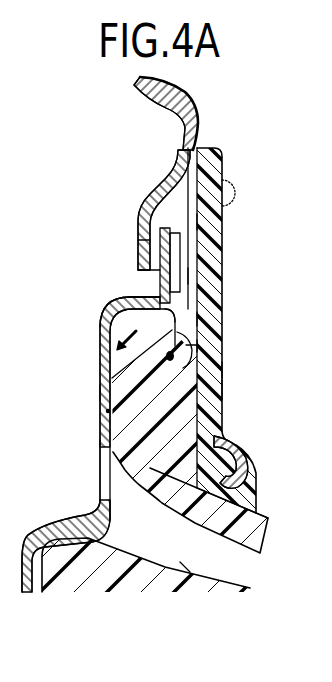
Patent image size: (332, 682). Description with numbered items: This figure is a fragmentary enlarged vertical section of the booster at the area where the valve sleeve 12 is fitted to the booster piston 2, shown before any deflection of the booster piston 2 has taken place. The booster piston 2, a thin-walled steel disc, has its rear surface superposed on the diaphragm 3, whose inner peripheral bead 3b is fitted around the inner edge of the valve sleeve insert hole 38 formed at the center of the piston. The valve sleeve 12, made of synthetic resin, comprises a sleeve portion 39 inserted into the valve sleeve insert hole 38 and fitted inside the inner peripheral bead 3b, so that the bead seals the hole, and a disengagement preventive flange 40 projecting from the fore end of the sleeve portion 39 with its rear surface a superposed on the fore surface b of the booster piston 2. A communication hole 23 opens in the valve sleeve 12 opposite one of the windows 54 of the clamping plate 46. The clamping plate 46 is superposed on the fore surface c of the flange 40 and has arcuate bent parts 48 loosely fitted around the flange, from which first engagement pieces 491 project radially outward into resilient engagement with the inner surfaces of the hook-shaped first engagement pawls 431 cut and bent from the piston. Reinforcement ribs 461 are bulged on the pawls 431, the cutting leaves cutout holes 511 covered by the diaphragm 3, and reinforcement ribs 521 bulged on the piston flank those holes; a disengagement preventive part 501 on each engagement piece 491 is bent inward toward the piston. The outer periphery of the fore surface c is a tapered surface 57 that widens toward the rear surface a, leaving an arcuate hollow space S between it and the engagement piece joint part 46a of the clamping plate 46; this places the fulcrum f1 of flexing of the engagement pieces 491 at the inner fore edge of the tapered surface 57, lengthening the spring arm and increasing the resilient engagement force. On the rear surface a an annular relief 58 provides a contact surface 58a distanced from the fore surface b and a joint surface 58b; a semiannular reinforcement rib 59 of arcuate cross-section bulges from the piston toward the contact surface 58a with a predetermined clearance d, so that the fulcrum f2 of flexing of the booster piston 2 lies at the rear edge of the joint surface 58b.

The booster piston 2 is at (181, 120).
The diaphragm 3 is at (200, 101).
The inner peripheral bead 3b is at (248, 503).
The valve sleeve 12 is at (88, 592).
The communication hole 23 is at (187, 567).
The valve sleeve insert hole 38 is at (253, 482).
The sleeve portion 39 is at (257, 538).
The disengagement preventive flange 40 is at (112, 420).
The clamping plate 46 is at (100, 440).
The engagement piece joint part 46a is at (105, 318).
The arcuate bent parts 48 is at (137, 290).
The windows 54 is at (100, 500).
The tapered surface 57 is at (132, 352).
The annular relief 58 is at (180, 352).
The contact surface 58a is at (142, 280).
The joint surface 58b is at (197, 345).
The semiannular reinforcement ribs 59 is at (198, 320).
The first engagement pawls 431 is at (137, 238).
The reinforcement ribs 461 is at (153, 205).
The first engagement pieces 491 is at (180, 275).
The disengagement preventive part 501 is at (180, 253).
The cutout holes 511 is at (198, 221).
The reinforcement ribs 521 is at (176, 228).
The arcuate hollow space S is at (105, 337).
The rear surface a is at (189, 398).
The fore surface b is at (218, 392).
The fore surface c is at (110, 408).
The predetermined clearance d is at (170, 330).
The fulcrum of flexing of engagement pieces f1 is at (112, 393).
The fulcrum of flexing of booster piston f2 is at (222, 370).